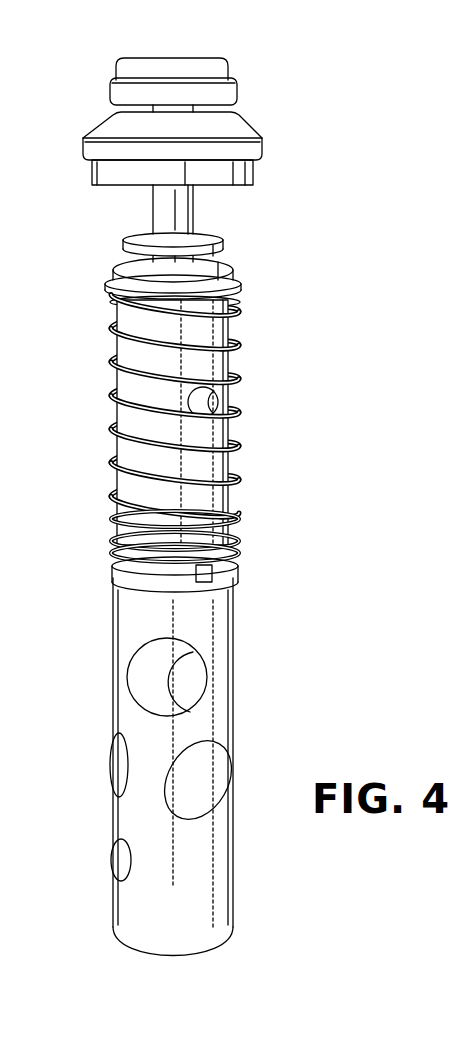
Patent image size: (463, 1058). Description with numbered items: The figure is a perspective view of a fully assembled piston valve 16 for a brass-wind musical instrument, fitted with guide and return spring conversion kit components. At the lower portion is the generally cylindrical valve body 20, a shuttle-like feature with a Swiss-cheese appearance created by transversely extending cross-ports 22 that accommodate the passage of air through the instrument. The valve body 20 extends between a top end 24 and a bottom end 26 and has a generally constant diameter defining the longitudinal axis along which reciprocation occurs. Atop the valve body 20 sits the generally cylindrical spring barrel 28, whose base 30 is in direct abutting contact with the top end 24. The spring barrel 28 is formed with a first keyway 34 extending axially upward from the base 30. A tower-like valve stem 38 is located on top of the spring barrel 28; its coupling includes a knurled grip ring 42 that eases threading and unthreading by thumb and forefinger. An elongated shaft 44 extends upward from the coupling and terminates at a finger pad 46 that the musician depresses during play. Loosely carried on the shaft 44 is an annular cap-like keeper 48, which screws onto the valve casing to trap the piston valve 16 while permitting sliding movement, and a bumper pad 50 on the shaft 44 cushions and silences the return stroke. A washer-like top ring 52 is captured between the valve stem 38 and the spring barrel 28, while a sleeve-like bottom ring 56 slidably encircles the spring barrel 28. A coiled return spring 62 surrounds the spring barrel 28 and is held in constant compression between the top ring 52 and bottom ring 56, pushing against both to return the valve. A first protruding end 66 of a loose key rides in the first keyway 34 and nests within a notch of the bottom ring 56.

The piston valve 16 is at (357, 257).
The valve body 20 is at (178, 771).
The cross-port 22 is at (143, 680).
The top end 24 is at (113, 568).
The bottom end 26 is at (115, 930).
The spring barrel 28 is at (181, 420).
The base 30 is at (112, 560).
The first keyway 34 is at (223, 422).
The valve stem 38 is at (151, 210).
The grip ring 42 is at (125, 273).
The elongated shaft 44 is at (196, 203).
The finger pad 46 is at (222, 93).
The keeper 48 is at (92, 150).
The bumper pad 50 is at (222, 243).
The top ring 52 is at (242, 288).
The bottom ring 56 is at (217, 605).
The return spring 62 is at (243, 375).
The first protruding end 66 is at (213, 582).